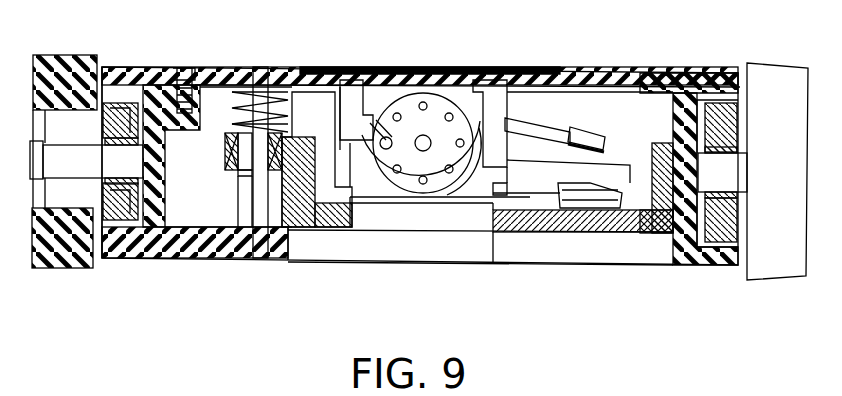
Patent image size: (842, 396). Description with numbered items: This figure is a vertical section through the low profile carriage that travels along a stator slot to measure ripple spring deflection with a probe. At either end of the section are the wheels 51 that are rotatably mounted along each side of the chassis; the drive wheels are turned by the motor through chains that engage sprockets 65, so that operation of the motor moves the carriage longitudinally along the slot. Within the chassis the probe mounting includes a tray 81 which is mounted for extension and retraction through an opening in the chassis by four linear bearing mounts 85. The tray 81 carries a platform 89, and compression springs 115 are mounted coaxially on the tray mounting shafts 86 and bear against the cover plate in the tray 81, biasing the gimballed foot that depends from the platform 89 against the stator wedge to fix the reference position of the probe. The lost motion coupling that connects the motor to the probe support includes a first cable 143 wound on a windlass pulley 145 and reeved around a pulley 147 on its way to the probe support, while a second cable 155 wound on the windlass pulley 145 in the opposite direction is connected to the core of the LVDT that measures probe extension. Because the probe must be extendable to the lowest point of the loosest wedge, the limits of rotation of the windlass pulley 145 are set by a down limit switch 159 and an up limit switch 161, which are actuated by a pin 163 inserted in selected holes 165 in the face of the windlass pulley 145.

The wheels 51 is at (83, 55).
The sprockets 65 is at (115, 108).
The compression springs 115 is at (288, 85).
The linear bearing mounts 85 is at (226, 156).
The tray mounting shafts 86 is at (252, 201).
The platform 89 is at (330, 193).
The up limit switch 161 is at (357, 118).
The pin 163 is at (384, 137).
The holes 165 is at (423, 101).
The windlass pulley 145 is at (407, 180).
The down limit switch 159 is at (493, 90).
The second cable 155 is at (537, 127).
The first cable 143 is at (473, 193).
The tray 81 is at (532, 232).
The pulley 147 is at (592, 208).